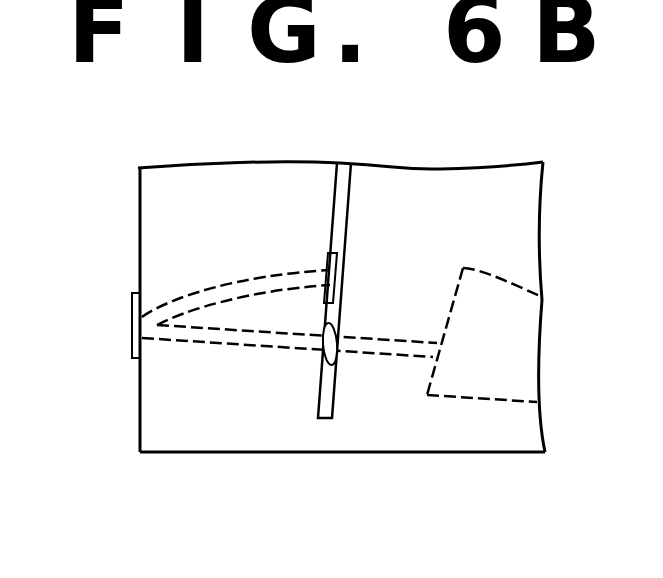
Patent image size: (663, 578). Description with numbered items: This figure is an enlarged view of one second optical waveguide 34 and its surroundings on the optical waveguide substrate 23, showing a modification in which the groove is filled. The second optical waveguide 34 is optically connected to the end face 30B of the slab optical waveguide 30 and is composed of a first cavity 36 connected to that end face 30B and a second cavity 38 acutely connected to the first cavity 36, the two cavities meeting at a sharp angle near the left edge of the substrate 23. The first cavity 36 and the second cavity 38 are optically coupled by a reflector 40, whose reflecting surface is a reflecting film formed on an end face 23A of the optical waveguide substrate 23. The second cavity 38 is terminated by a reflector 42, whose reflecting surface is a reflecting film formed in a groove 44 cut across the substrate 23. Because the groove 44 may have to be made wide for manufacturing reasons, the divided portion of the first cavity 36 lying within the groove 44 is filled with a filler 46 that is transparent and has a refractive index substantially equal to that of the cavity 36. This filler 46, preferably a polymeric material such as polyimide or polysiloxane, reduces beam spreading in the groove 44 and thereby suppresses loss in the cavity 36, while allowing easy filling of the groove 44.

The optical waveguide substrate 23 is at (405, 443).
The end face of the optical waveguide substrate 23A is at (137, 430).
The slab optical waveguide 30 is at (487, 400).
The end face of the slab optical waveguide 30B is at (467, 265).
The second optical waveguide 34 is at (289, 296).
The first cavity 36 is at (203, 345).
The second cavity 38 is at (207, 290).
The reflector 40 is at (132, 327).
The reflector 42 is at (340, 273).
The groove 44 is at (352, 192).
The filler 46 is at (335, 372).